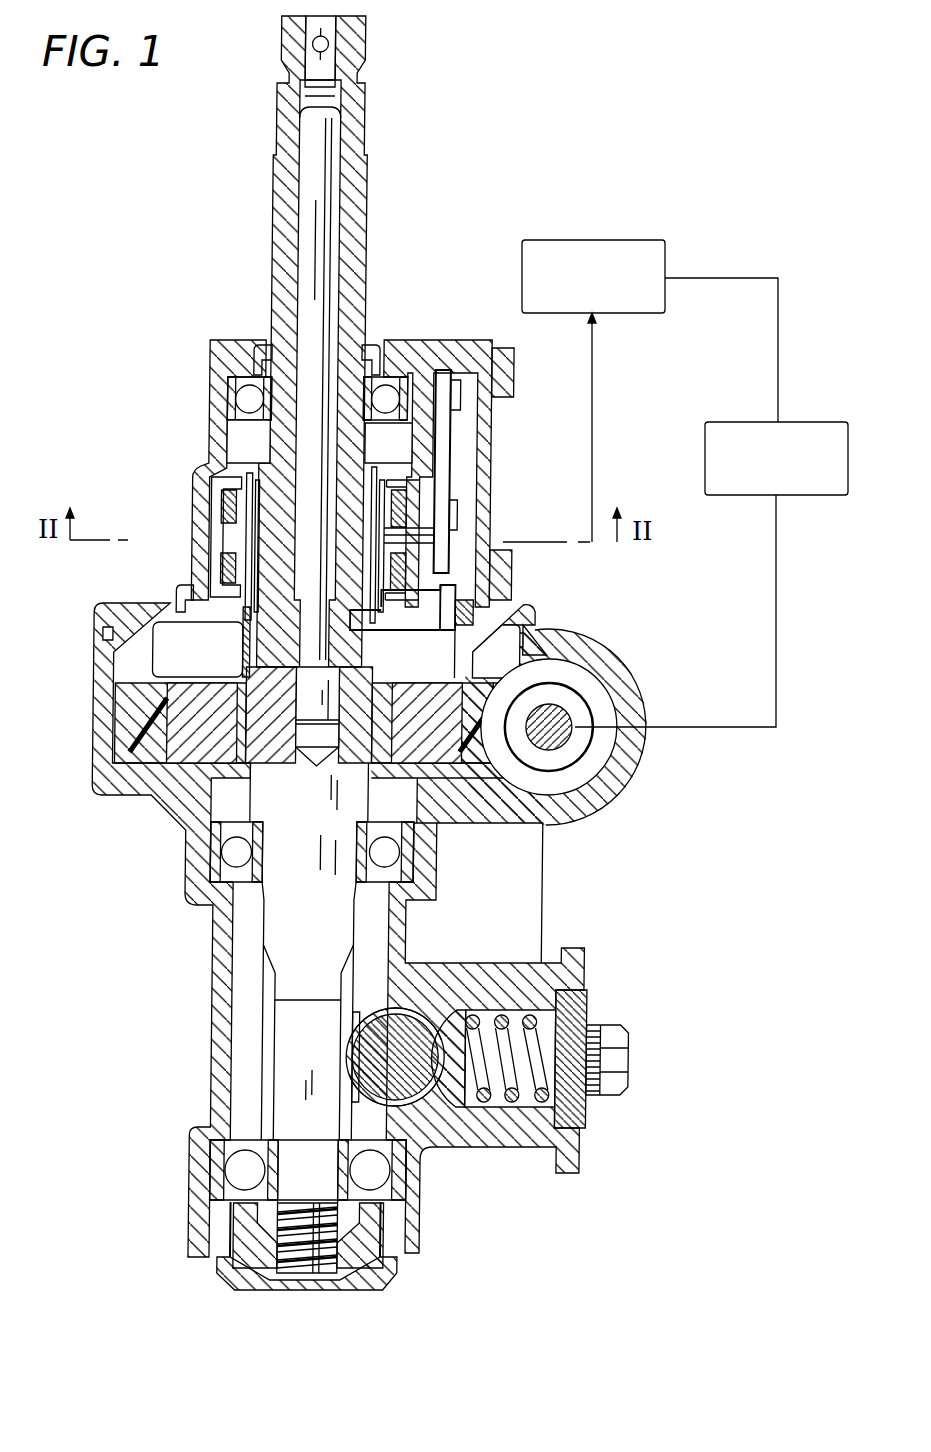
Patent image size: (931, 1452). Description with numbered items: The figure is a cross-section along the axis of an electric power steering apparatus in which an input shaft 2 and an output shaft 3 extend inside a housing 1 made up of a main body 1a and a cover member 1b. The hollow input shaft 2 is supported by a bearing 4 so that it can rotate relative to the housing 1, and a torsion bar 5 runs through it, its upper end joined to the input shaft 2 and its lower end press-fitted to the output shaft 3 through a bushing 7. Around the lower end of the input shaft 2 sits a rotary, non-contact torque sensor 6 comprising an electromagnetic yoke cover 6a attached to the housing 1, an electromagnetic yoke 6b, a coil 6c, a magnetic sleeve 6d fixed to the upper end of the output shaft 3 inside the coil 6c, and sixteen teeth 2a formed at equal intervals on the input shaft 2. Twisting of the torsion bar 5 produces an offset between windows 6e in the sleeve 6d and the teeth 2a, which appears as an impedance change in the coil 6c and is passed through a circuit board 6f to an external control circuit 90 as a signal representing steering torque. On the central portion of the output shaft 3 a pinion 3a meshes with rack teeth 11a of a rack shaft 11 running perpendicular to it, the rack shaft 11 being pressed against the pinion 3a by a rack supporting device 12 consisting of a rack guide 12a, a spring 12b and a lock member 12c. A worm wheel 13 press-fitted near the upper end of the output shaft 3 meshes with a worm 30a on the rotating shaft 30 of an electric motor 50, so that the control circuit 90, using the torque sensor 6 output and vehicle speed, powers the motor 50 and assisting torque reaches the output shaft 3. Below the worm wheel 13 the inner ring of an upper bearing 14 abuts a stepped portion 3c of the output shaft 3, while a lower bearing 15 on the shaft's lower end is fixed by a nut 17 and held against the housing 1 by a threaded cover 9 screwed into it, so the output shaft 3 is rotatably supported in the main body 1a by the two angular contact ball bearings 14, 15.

The housing 1 is at (683, 592).
The main body 1a is at (592, 657).
The cover member 1b is at (545, 608).
The input shaft 2 is at (277, 448).
The teeth 2a is at (242, 440).
The output shaft 3 is at (283, 797).
The pinion 3a is at (265, 1095).
The stepped portion 3c is at (237, 850).
The bearing 4 is at (400, 340).
The torsion bar 5 is at (297, 200).
The torque sensor 6 is at (140, 390).
The electromagnetic yoke cover 6a is at (228, 532).
The electromagnetic yoke 6b is at (222, 492).
The coil 6c is at (222, 516).
The sleeve 6d is at (215, 478).
The windows 6e is at (243, 607).
The circuit board 6f is at (455, 452).
The bushing 7 is at (460, 630).
The threaded cover 9 is at (258, 1283).
The rack shaft 11 is at (440, 990).
The rack teeth 11a is at (350, 1053).
The rack supporting device 12 is at (527, 1247).
The rack guide 12a is at (490, 1143).
The spring 12b is at (558, 1128).
The lock member 12c is at (627, 1100).
The worm wheel 13 is at (215, 722).
The upper bearing 14 is at (402, 857).
The lower bearing 15 is at (212, 1165).
The nut 17 is at (347, 1233).
The rotating shaft 30 is at (586, 756).
The worm 30a is at (553, 767).
The electric motor 50 is at (828, 420).
The control circuit 90 is at (623, 238).